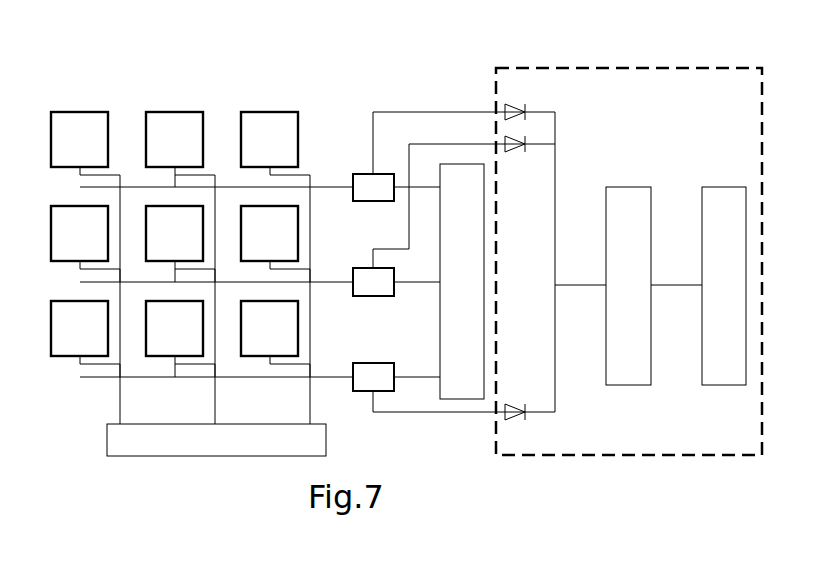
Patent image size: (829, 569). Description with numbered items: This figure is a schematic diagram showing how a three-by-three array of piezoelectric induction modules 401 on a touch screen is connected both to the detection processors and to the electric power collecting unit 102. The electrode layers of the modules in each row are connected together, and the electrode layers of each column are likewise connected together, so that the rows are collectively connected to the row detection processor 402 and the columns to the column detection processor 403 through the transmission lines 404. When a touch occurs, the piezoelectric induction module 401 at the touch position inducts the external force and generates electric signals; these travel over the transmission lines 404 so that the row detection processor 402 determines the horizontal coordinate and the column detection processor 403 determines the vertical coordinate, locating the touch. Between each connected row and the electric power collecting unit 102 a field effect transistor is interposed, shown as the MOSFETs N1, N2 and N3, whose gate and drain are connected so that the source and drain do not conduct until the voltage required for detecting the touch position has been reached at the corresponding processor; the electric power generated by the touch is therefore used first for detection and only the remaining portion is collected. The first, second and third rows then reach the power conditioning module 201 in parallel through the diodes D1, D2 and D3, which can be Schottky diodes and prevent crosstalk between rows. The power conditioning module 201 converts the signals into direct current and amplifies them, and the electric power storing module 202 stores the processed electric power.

The electric power collecting unit 102 is at (627, 68).
The power conditioning module 201 is at (627, 187).
The electric power storing module 202 is at (724, 187).
The piezoelectric induction module 401 is at (146, 112).
The row detection processor 402 is at (484, 282).
The column detection processor 403 is at (107, 439).
The transmission lines 404 is at (80, 187).
The MOSFET N1 is at (373, 187).
The MOSFET N2 is at (373, 282).
The MOSFET N3 is at (373, 377).
The diode D1 is at (515, 95).
The diode D2 is at (515, 160).
The diode D3 is at (515, 428).